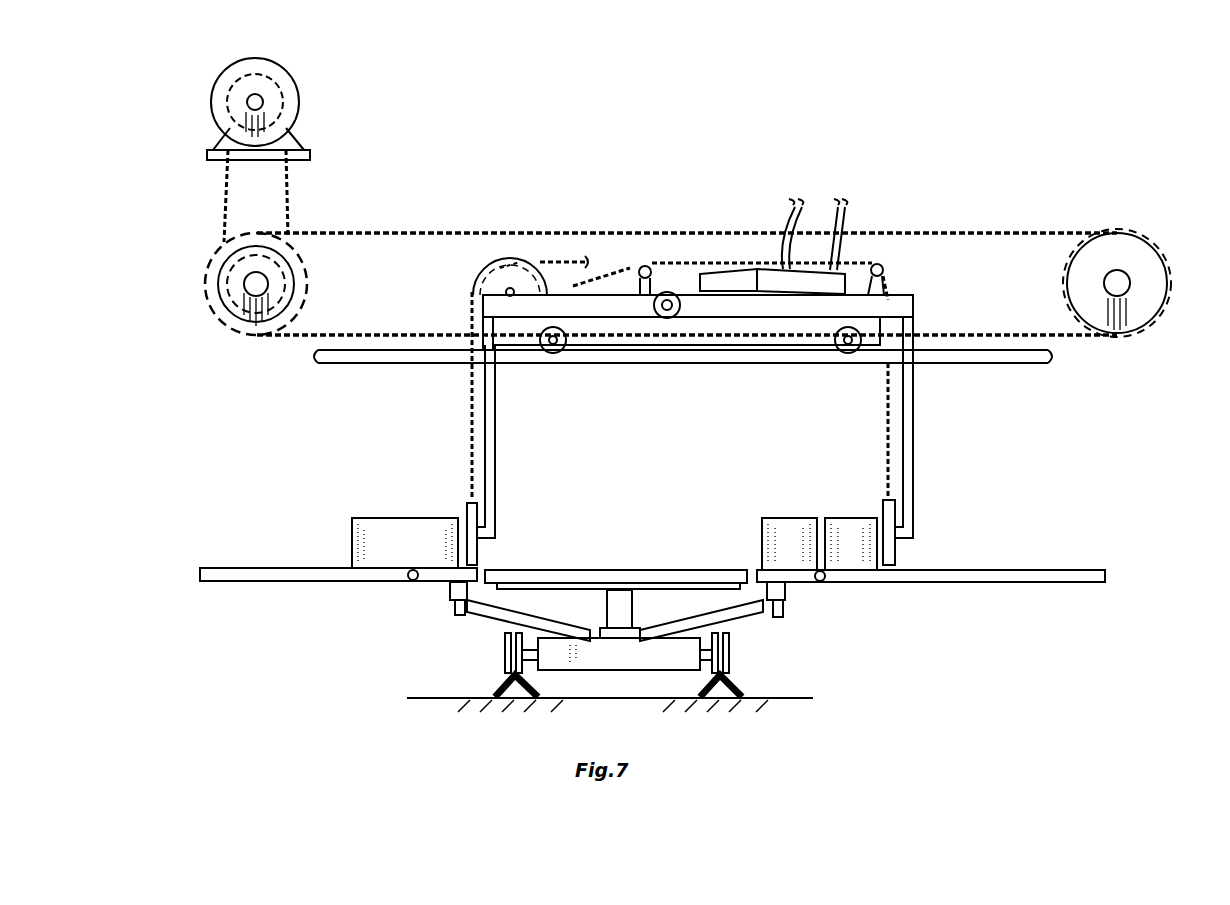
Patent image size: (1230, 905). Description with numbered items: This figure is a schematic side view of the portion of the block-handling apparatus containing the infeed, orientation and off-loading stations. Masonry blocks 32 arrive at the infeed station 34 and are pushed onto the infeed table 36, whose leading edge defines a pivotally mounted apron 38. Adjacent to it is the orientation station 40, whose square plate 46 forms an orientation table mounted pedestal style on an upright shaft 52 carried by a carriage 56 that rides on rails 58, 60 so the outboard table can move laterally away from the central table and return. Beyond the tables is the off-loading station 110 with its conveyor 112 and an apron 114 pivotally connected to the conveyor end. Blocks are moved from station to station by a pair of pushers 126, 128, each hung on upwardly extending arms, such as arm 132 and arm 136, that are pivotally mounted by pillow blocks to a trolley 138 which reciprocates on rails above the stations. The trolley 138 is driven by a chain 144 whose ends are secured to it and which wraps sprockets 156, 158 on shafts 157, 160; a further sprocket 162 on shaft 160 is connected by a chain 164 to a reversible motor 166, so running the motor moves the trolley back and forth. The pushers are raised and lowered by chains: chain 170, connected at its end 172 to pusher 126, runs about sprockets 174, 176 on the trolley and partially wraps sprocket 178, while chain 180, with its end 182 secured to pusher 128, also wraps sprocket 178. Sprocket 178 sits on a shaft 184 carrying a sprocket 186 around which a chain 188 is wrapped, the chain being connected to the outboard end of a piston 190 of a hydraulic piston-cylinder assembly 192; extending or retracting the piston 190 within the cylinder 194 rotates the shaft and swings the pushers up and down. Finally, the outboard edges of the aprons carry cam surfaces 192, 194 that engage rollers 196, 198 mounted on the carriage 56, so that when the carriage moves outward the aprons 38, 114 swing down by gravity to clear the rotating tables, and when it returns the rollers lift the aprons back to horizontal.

The masonry blocks 32 is at (795, 518).
The infeed station 34 is at (989, 455).
The infeed table 36 is at (1025, 577).
The apron 38 is at (800, 584).
The orientation station 40 is at (606, 465).
The square plate 46 is at (670, 574).
The upright shaft 52 is at (632, 602).
The carriage 56 is at (619, 654).
The rail 58 is at (500, 686).
The rail 60 is at (740, 690).
The off-loading station 110 is at (278, 525).
The conveyor 112 is at (293, 583).
The apron 114 is at (440, 585).
The pusher 126 is at (897, 548).
The pusher 128 is at (478, 553).
The arm 132 is at (905, 305).
The arm 136 is at (490, 301).
The trolley 138 is at (705, 342).
The chain 144 is at (1005, 333).
The sprocket 156 is at (1158, 300).
The shaft 157 is at (1122, 282).
The sprocket 158 is at (298, 280).
The shaft 160 is at (252, 287).
The sprocket 162 is at (240, 272).
The chain 164 is at (228, 186).
The reversible motor 166 is at (240, 72).
The chain 170 is at (600, 282).
The end of chain 172 is at (896, 497).
The sprocket 174 is at (885, 270).
The sprocket 176 is at (647, 266).
The sprocket 178 is at (496, 252).
The chain 180 is at (468, 392).
The end of chain 182 is at (468, 498).
The shaft 184 is at (505, 290).
The sprocket 186 is at (512, 289).
The chain 188 is at (563, 258).
The piston 190 is at (712, 280).
The hydraulic piston-cylinder assembly 192 is at (760, 290).
The cylinder 194 is at (810, 290).
The roller 196 is at (778, 618).
The roller 198 is at (460, 616).